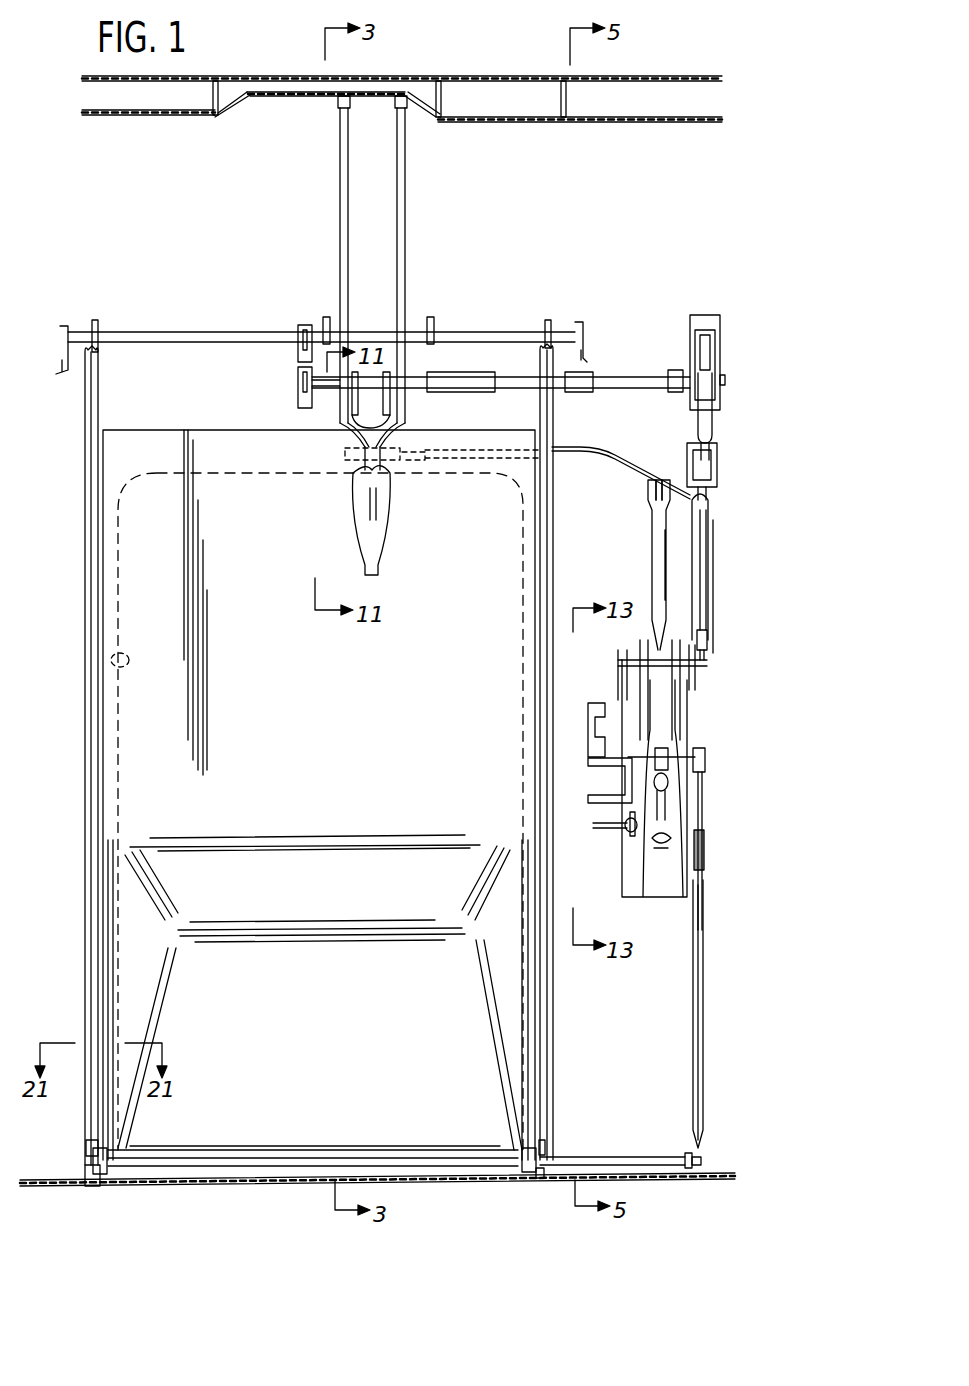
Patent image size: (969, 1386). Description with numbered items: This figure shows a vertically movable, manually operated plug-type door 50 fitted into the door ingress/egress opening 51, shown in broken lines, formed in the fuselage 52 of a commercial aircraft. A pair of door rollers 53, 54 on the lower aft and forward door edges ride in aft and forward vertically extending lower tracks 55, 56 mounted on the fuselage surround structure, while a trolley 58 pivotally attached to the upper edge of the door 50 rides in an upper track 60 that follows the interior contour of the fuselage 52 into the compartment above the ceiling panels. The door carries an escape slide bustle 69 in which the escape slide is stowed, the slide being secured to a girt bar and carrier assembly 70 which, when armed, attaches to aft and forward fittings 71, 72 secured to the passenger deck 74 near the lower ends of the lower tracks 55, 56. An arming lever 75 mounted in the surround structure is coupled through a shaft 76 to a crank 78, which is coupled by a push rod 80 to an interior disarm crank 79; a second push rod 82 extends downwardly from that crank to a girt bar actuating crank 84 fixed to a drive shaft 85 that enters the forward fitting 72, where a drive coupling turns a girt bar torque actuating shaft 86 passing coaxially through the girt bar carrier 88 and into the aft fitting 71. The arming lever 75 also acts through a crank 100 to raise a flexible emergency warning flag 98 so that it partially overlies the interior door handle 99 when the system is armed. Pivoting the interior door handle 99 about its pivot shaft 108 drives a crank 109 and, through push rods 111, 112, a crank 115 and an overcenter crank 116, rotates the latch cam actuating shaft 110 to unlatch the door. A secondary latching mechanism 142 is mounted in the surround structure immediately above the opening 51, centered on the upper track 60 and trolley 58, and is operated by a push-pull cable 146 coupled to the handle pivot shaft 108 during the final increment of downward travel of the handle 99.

The plug-type door 50 is at (120, 590).
The door opening 51 is at (110, 663).
The fuselage 52 is at (545, 105).
The aft door roller 53 is at (85, 1150).
The forward door roller 54 is at (553, 1143).
The aft lower track 55 is at (85, 1000).
The forward lower track 56 is at (555, 1010).
The trolley 58 is at (347, 447).
The upper track 60 is at (405, 245).
The escape slide bustle 69 is at (180, 960).
The girt bar and carrier assembly 70 is at (275, 1185).
The aft fitting 71 is at (98, 1175).
The forward fitting 72 is at (545, 1180).
The passenger deck 74 is at (722, 1170).
The arming lever 75 is at (595, 705).
The shaft 76 is at (605, 762).
The crank 78 is at (705, 757).
The interior disarm crank 79 is at (705, 850).
The push rod 80 is at (703, 810).
The second push rod 82 is at (700, 1010).
The girt bar actuating crank 84 is at (700, 1150).
The drive shaft 85 is at (658, 1122).
The girt bar torque actuating shaft 86 is at (115, 1162).
The girt bar carrier 88 is at (318, 1165).
The emergency warning flag 98 is at (612, 830).
The interior door handle 99 is at (600, 806).
The crank 100 is at (728, 570).
The pivot shaft 108 is at (632, 650).
The crank 109 is at (700, 645).
The latch cam actuating shaft 110 is at (635, 378).
The push rod 111 is at (697, 587).
The push rod 112 is at (712, 425).
The crank 115 is at (717, 470).
The overcenter crank 116 is at (720, 340).
The secondary latching mechanism 142 is at (400, 438).
The push-pull cable 146 is at (625, 460).